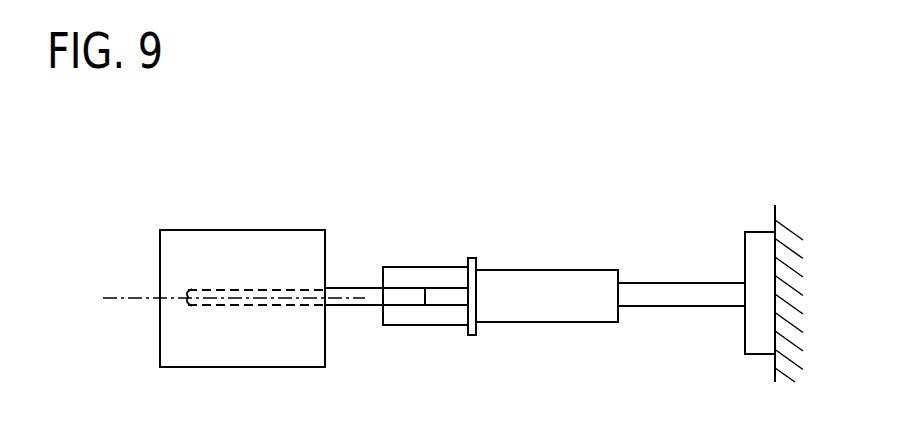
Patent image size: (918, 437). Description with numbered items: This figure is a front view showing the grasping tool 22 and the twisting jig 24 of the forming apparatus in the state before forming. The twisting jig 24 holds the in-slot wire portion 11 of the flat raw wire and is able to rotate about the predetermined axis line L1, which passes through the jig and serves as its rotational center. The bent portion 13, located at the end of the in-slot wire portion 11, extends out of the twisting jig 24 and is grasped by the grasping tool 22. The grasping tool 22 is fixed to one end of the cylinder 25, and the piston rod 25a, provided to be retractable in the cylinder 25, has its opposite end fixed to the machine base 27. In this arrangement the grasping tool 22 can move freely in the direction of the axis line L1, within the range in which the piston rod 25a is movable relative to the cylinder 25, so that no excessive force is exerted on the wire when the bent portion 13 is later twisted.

The axis line L1 is at (122, 298).
The twisting jig 24 is at (195, 230).
The in-slot wire portion 11 is at (260, 288).
The bent portion 13 is at (373, 300).
The grasping tool 22 is at (413, 267).
The cylinder 25 is at (532, 270).
The piston rod 25a is at (678, 283).
The machine base 27 is at (778, 368).